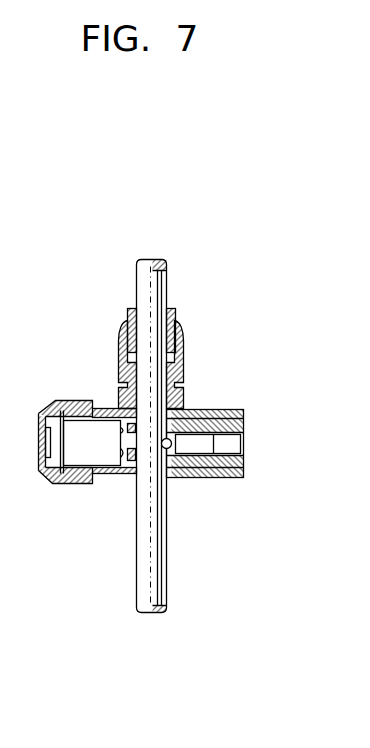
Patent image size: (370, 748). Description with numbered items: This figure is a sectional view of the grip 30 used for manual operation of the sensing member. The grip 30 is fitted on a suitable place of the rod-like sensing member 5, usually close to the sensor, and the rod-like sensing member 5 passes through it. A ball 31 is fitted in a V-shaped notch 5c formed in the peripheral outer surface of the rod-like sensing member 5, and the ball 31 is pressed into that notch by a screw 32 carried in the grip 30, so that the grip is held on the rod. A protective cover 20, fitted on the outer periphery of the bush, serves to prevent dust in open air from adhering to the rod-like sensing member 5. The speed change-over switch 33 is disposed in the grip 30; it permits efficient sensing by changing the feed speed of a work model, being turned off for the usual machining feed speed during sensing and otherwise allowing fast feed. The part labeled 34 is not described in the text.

The plate 5 is at (168, 531).
The ball 5c is at (160, 448).
The collar 20 is at (176, 311).
The body 30 is at (195, 440).
The lower wall of body 31 is at (190, 476).
The rod 32 is at (228, 451).
The nut 33 is at (57, 462).
The flange 34 is at (183, 350).